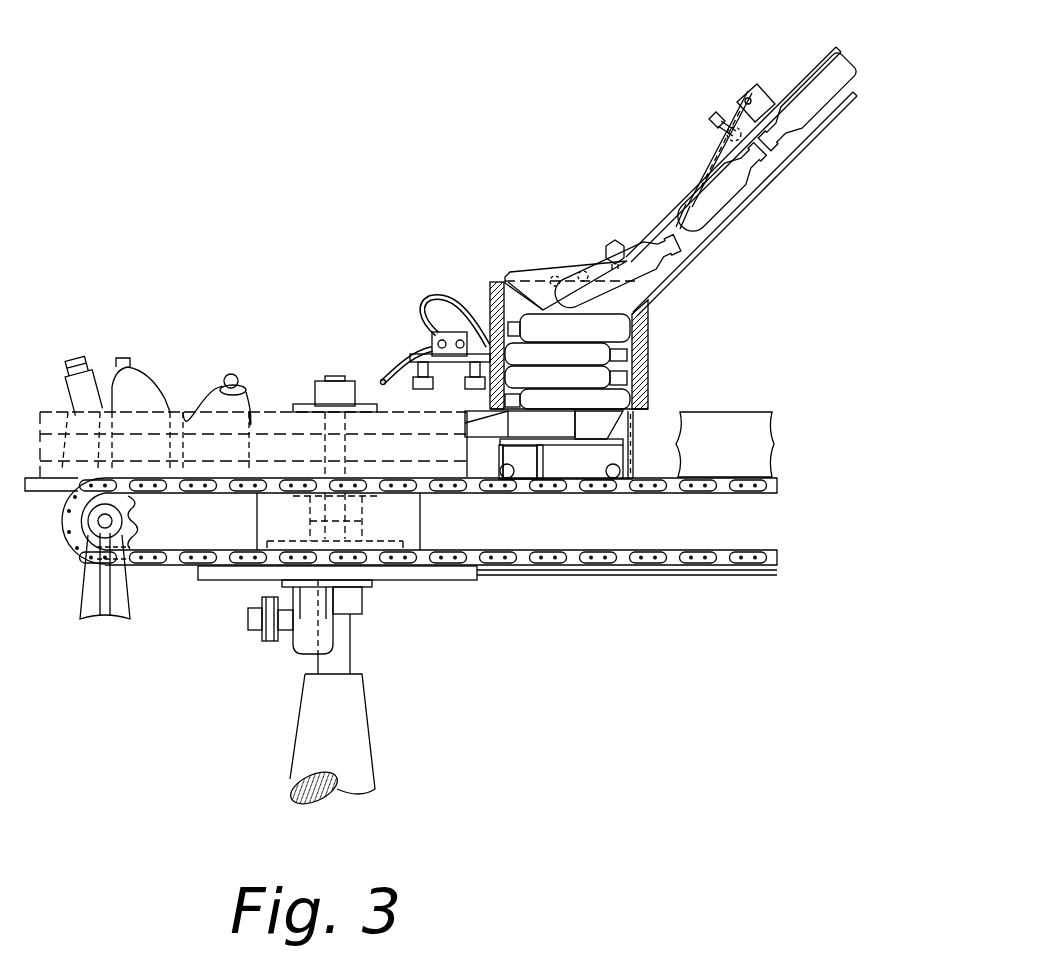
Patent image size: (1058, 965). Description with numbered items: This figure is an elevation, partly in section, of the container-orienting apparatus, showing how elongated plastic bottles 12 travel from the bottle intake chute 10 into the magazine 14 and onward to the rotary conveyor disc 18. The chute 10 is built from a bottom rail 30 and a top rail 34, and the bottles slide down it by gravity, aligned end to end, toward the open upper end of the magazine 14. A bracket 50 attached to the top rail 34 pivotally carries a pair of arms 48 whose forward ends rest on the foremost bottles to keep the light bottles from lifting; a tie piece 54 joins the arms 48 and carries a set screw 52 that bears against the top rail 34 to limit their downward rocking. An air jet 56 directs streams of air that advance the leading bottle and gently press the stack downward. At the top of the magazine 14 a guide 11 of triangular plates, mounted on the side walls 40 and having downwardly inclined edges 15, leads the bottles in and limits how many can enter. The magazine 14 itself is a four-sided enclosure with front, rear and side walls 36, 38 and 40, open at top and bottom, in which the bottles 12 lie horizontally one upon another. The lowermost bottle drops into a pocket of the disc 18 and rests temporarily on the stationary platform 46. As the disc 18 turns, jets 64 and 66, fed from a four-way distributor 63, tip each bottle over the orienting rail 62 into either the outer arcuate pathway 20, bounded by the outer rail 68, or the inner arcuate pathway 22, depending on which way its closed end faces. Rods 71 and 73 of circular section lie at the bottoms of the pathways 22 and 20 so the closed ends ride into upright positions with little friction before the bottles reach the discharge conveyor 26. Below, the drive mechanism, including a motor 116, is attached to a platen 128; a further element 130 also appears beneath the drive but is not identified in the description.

The bottle intake chute 10 is at (724, 260).
The guide 11 is at (556, 272).
The elongated plastic bottles 12 is at (665, 276).
The magazine or hopper 14 is at (668, 325).
The downwardly inclined edges 15 is at (555, 305).
The rotary conveyor disc 18 is at (490, 432).
The outer arcuate pathway 20 is at (585, 460).
The inner arcuate pathway 22 is at (523, 473).
The discharge conveyor 26 is at (676, 578).
The bottom rail 30 is at (740, 217).
The top rail 34 is at (809, 75).
The front wall 36 is at (490, 288).
The rear wall 38 is at (650, 357).
The side wall 40 is at (511, 283).
The stationary platform 46 is at (603, 438).
The arms 48 is at (712, 164).
The bracket 50 is at (758, 104).
The set screw 52 is at (714, 118).
The tie piece 54 is at (725, 128).
The air jet 56 is at (615, 241).
The orienting rail 62 is at (545, 472).
The four-way distributor 63 is at (448, 338).
The jet 64 is at (470, 391).
The jet 66 is at (420, 391).
The outer rail 68 is at (44, 412).
The rod 71 is at (502, 478).
The rod 73 is at (623, 472).
The motor 116 is at (300, 648).
The platen 128 is at (440, 581).
The funnel 130 is at (365, 738).